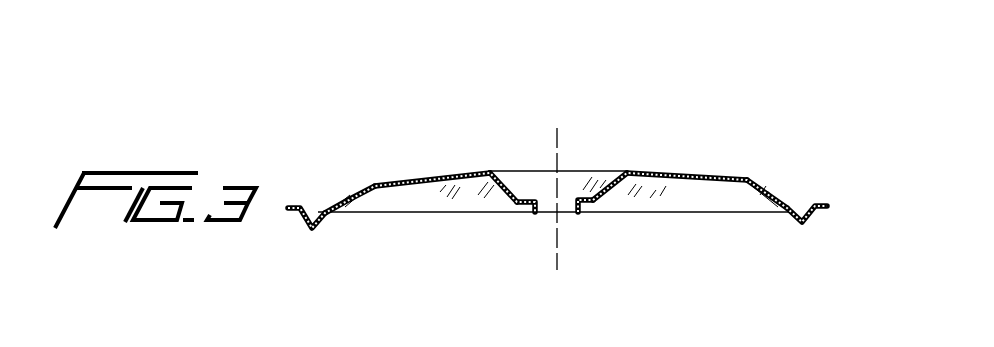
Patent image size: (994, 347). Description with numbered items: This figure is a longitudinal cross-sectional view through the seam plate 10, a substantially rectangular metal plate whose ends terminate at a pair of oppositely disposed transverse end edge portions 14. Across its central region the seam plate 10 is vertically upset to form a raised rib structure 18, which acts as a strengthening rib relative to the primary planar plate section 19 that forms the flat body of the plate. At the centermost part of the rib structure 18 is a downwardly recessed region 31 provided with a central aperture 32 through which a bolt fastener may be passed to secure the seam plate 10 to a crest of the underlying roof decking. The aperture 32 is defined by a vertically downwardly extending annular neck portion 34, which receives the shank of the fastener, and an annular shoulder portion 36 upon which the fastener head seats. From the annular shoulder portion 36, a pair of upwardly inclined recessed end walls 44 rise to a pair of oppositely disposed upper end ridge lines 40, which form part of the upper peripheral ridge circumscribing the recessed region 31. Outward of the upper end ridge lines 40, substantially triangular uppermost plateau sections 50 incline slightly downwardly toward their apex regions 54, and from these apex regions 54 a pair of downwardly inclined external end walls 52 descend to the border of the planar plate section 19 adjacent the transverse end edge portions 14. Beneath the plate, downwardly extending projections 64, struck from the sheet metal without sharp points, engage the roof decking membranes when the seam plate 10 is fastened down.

The seam plate 10 is at (722, 90).
The transverse end edge portion 14 is at (832, 206).
The rib structure 18 is at (380, 202).
The planar plate section 19 is at (405, 213).
The recessed region 31 is at (538, 187).
The aperture 32 is at (575, 213).
The annular neck portion 34 is at (535, 213).
The annular shoulder portion 36 is at (592, 195).
The upper end ridge line 40 is at (490, 173).
The upwardly inclined recessed end wall 44 is at (480, 203).
The triangular uppermost plateau section 50 is at (427, 180).
The downwardly inclined external end wall 52 is at (335, 197).
The apex region 54 is at (370, 185).
The downwardly extending projection 64 is at (312, 229).